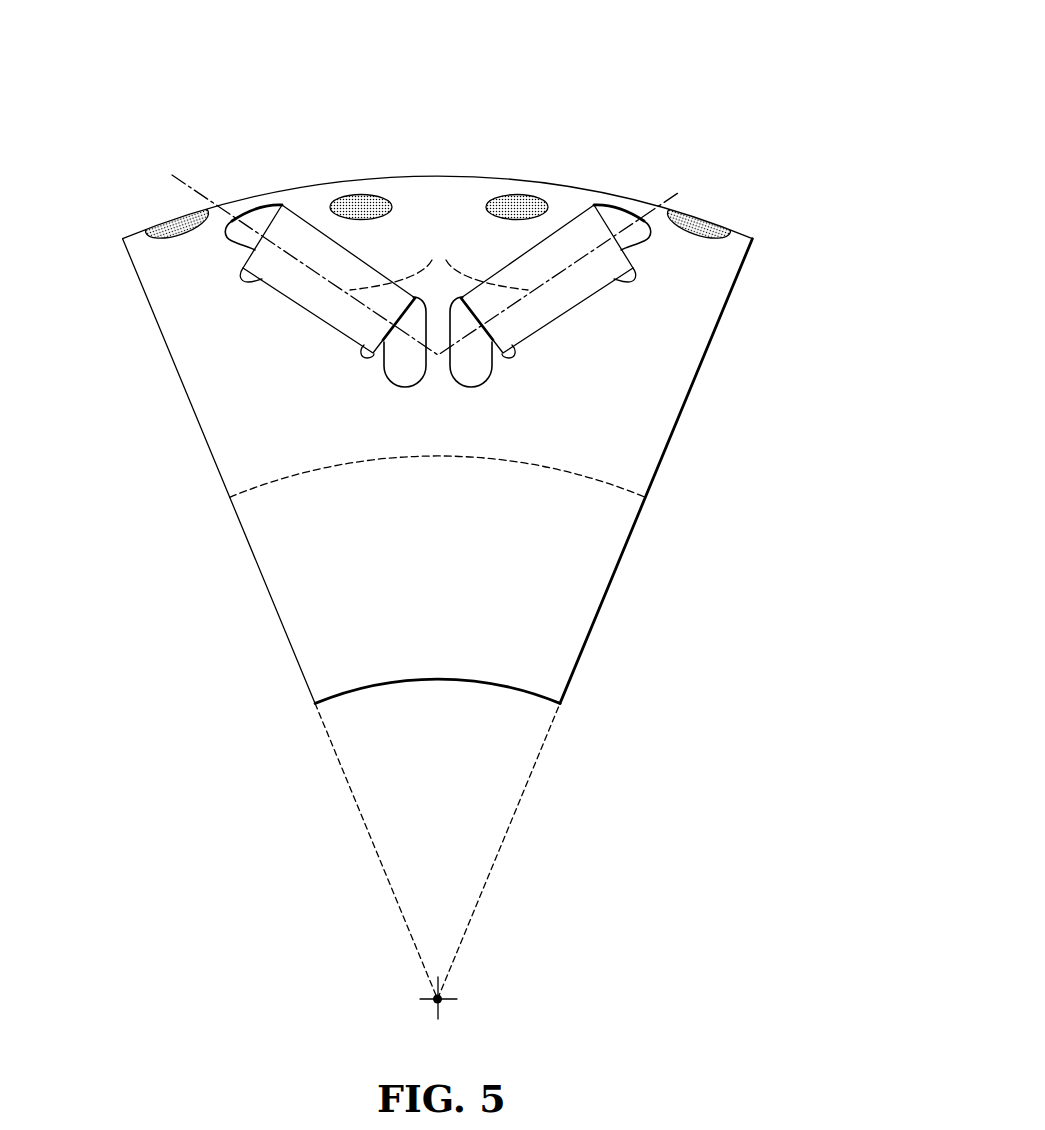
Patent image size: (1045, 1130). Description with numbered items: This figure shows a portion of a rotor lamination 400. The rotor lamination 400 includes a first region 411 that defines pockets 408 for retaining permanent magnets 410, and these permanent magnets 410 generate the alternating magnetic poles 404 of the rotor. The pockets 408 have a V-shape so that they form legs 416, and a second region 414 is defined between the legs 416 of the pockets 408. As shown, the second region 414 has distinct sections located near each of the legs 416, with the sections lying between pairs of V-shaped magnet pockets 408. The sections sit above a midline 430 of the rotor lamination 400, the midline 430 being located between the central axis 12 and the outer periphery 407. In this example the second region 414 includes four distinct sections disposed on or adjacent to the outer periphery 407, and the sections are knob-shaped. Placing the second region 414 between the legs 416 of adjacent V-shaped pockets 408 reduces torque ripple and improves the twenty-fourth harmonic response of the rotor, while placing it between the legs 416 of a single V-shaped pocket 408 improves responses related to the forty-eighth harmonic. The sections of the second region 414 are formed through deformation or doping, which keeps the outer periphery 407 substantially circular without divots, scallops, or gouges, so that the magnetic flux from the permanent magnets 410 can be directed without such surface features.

The rotor lamination 400 is at (560, 70).
The alternating magnetic poles 404 is at (444, 165).
The outer periphery 407 is at (633, 197).
The pockets 408 is at (237, 230).
The permanent magnets 410 is at (317, 294).
The first region 411 is at (310, 590).
The second region 414 is at (170, 222).
The legs 416 is at (439, 262).
The midline 430 is at (420, 458).
The central axis 12 is at (458, 983).